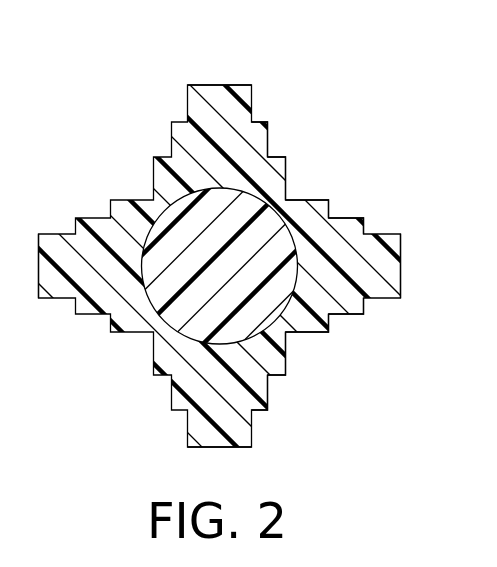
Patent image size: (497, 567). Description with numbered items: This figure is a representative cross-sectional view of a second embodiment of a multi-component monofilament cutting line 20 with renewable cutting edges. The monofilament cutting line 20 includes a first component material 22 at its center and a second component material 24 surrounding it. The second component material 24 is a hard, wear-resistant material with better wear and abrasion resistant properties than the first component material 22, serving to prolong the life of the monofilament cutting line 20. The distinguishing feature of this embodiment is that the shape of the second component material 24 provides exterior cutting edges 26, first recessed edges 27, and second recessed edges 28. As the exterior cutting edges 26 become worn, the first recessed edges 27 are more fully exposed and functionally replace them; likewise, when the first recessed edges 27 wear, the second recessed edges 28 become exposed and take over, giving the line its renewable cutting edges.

The monofilament cutting line 20 is at (80, 109).
The first component material 22 is at (265, 227).
The second component material 24 is at (248, 160).
The exterior cutting edges 26 is at (188, 85).
The first recessed edges 27 is at (364, 218).
The second recessed edges 28 is at (328, 200).